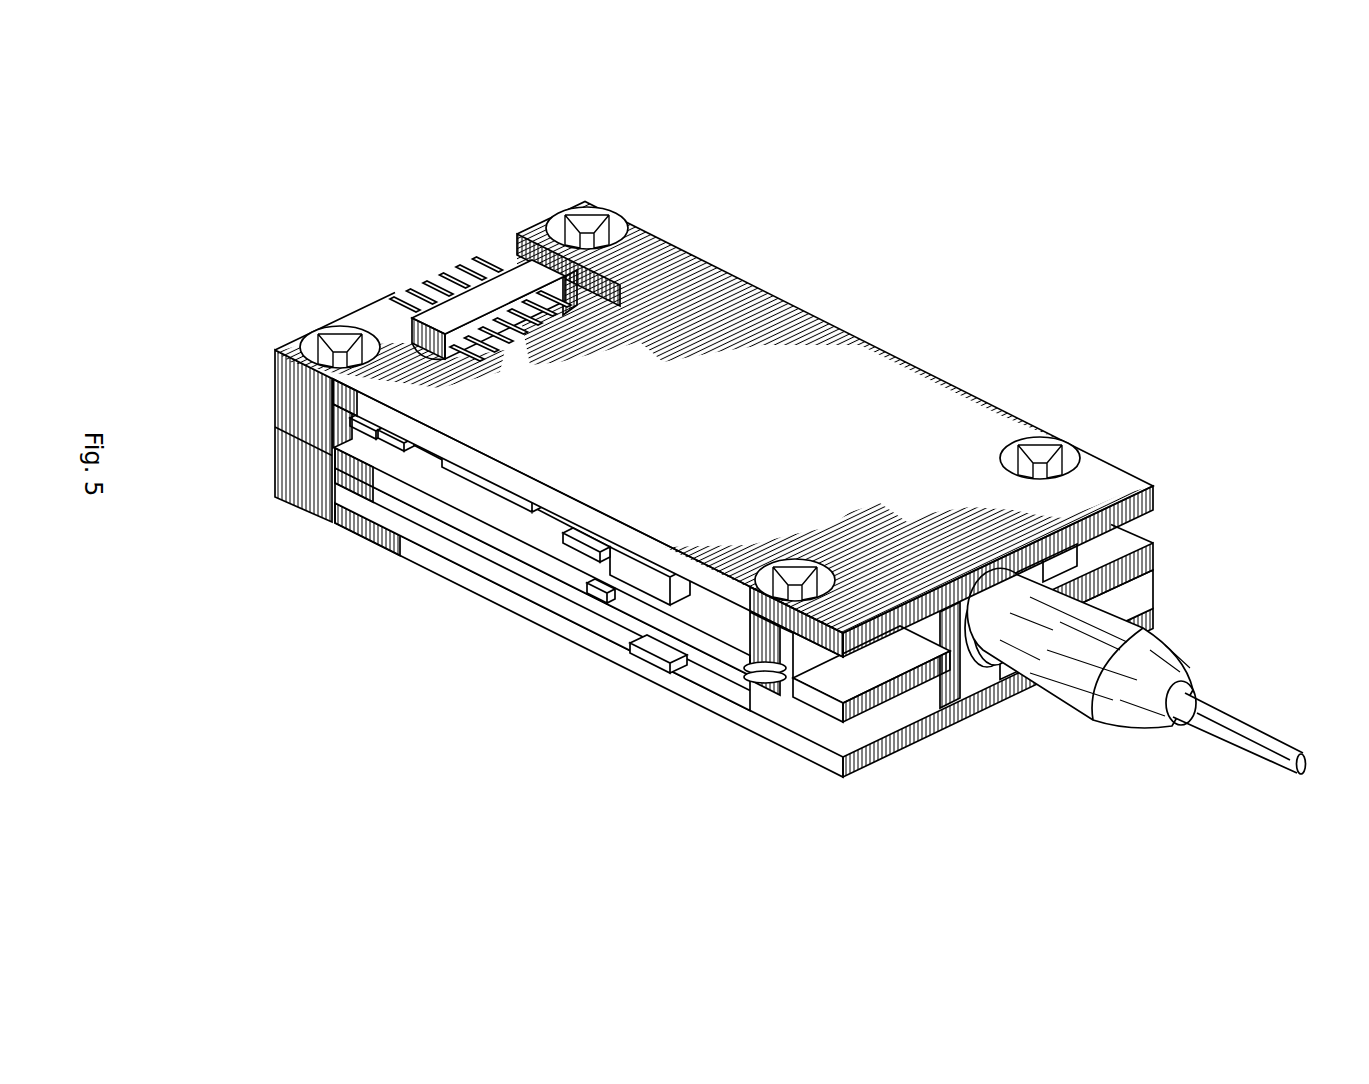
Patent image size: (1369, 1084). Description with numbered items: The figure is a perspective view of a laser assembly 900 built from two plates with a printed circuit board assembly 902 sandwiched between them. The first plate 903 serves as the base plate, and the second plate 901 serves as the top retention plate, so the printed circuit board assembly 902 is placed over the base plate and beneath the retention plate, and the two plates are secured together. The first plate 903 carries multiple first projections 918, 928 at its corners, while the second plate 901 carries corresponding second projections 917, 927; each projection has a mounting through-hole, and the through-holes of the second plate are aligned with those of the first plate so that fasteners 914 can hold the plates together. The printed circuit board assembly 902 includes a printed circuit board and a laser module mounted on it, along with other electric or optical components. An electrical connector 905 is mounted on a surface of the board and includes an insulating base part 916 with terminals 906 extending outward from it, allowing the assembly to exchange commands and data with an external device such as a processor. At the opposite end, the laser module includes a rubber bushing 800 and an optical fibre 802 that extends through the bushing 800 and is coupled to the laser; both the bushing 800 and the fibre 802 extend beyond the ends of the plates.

The laser assembly 900 is at (751, 495).
The second plate 901 is at (935, 395).
The printed circuit board assembly 902 is at (387, 485).
The first plate 903 is at (345, 514).
The electrical connector 905 is at (403, 256).
The terminals 906 is at (417, 273).
The screws 914 is at (598, 226).
The insulating base part 916 is at (508, 290).
The second projection 917 is at (290, 400).
The first projection 918 is at (792, 655).
The second projection 927 is at (335, 493).
The first projection 928 is at (833, 772).
The rubber bushing 800 is at (1153, 671).
The optical fibre 802 is at (1235, 716).